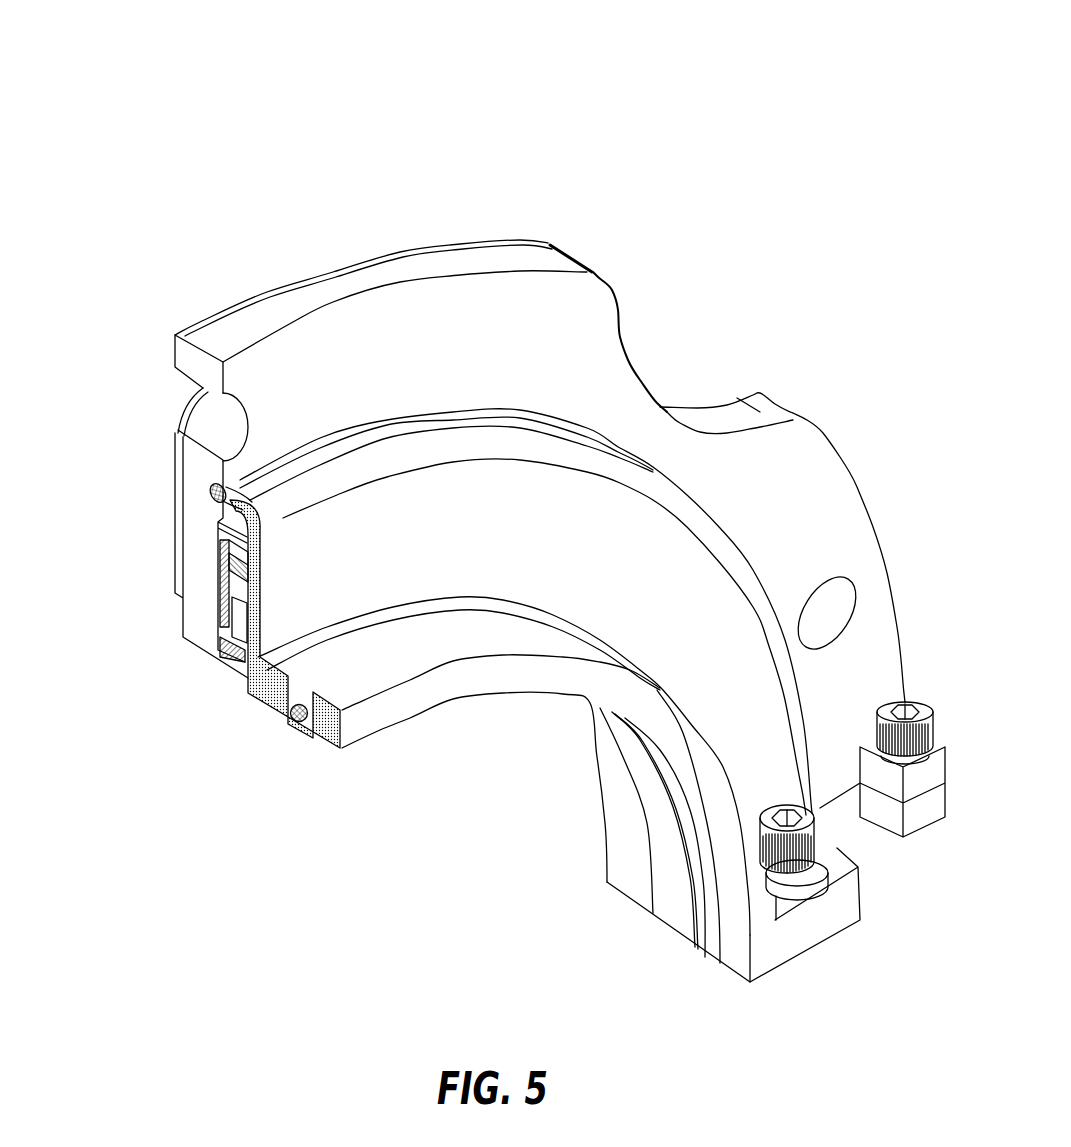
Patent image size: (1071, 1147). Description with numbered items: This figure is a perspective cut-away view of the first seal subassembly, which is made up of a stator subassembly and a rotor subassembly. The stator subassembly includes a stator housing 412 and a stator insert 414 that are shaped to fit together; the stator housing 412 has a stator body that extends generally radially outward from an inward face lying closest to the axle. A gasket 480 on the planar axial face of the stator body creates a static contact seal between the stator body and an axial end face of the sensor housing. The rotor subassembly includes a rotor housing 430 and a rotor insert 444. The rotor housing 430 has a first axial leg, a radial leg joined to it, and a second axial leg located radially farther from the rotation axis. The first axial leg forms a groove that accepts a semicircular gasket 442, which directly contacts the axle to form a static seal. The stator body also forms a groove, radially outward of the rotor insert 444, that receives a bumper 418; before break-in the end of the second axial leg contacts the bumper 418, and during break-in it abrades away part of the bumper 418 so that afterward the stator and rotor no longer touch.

The gasket 480 is at (342, 264).
The stator housing 412 is at (180, 375).
The bumper 418 is at (191, 503).
The rotor insert 444 is at (204, 564).
The stator insert 414 is at (211, 666).
The rotor housing 430 is at (250, 716).
The semicircular gasket 442 is at (291, 744).